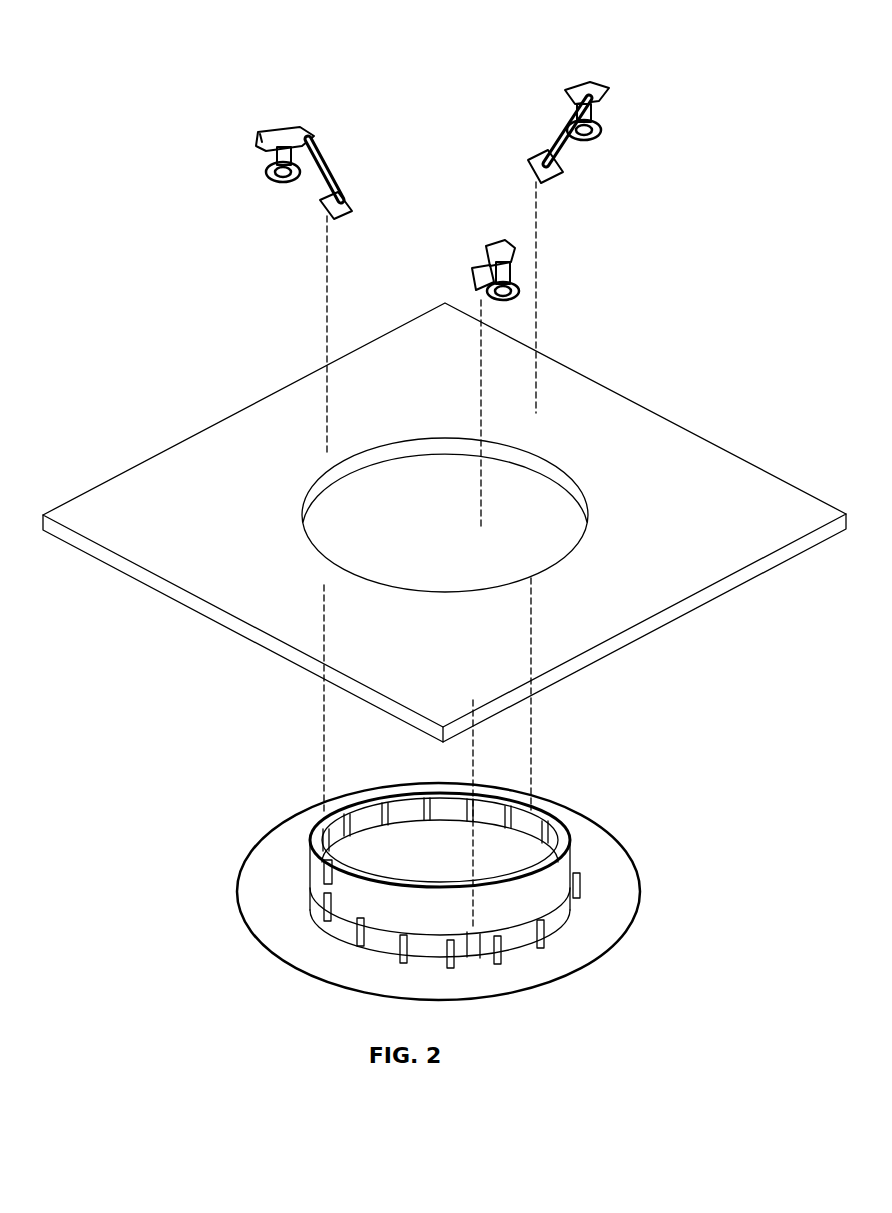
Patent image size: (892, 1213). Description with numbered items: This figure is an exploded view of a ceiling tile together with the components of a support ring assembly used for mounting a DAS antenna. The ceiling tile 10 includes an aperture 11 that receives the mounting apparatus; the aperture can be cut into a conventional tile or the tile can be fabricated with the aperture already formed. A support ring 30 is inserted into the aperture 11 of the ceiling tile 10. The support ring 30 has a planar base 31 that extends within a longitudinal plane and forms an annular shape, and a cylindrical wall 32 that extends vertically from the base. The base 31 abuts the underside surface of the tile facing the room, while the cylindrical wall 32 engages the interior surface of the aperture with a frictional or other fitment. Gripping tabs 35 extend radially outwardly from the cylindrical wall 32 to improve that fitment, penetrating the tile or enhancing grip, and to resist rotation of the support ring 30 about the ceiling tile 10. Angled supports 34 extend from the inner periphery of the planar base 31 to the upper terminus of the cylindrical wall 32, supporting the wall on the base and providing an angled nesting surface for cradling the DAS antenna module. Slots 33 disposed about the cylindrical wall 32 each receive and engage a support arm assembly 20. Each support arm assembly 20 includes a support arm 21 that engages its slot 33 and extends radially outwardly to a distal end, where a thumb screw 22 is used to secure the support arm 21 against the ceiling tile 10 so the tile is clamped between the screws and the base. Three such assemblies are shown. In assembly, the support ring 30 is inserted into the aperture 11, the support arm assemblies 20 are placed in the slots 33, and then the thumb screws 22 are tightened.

The ceiling tile 10 is at (681, 443).
The aperture 11 is at (406, 536).
The support arm assembly 20 is at (451, 178).
The support arm 21 is at (330, 161).
The thumb screw 22 is at (262, 177).
The support ring 30 is at (387, 870).
The planar base 31 is at (612, 850).
The cylindrical wall 32 is at (400, 795).
The slot 33 is at (530, 820).
The angled support 34 is at (330, 815).
The gripping tab 35 is at (568, 917).